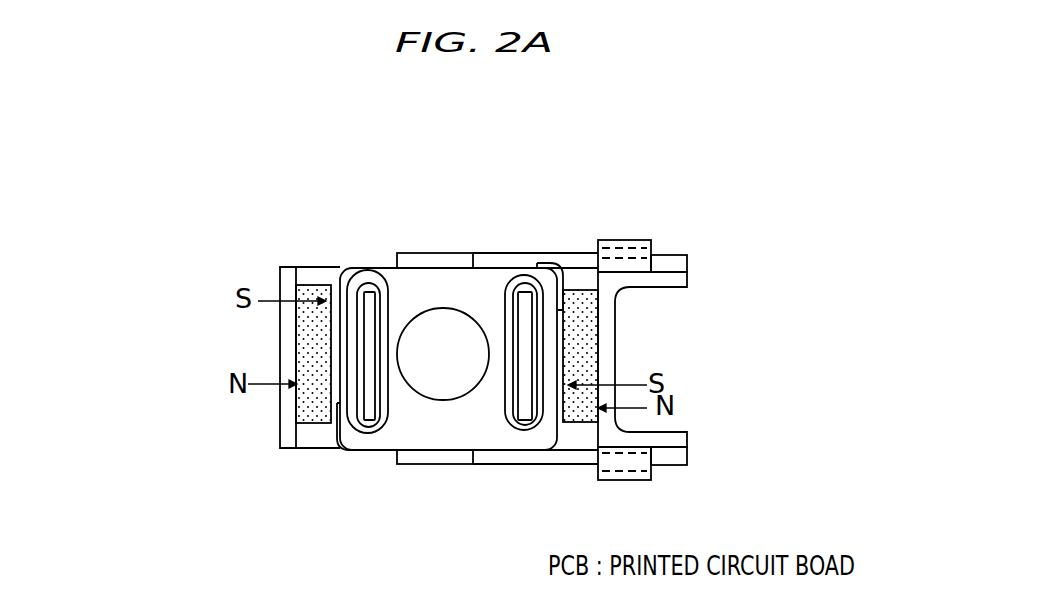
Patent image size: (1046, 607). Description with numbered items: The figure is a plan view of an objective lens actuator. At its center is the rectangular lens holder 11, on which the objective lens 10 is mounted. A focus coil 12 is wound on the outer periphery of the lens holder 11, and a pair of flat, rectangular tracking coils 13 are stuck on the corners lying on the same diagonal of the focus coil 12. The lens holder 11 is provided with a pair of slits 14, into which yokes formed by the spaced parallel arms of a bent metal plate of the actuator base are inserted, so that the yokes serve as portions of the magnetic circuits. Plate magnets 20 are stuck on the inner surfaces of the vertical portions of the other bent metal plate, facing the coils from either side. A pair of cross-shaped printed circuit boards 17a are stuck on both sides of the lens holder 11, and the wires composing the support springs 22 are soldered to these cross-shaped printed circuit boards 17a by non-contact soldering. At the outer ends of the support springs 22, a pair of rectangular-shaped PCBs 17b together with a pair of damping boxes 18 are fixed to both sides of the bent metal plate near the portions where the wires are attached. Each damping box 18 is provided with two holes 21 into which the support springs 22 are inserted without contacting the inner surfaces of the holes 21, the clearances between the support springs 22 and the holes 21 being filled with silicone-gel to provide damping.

The objective lens 10 is at (443, 332).
The lens holder 11 is at (398, 428).
The focus coil 12 is at (370, 277).
The tracking coil 13 is at (558, 262).
The slit 14 is at (540, 202).
The cross-shaped printed circuit board 17a is at (443, 490).
The rectangular-shaped PCB 17b is at (666, 262).
The damping box 18 is at (620, 240).
The plate magnet 20 is at (637, 350).
The hole 21 is at (652, 254).
The support spring 22 is at (497, 254).